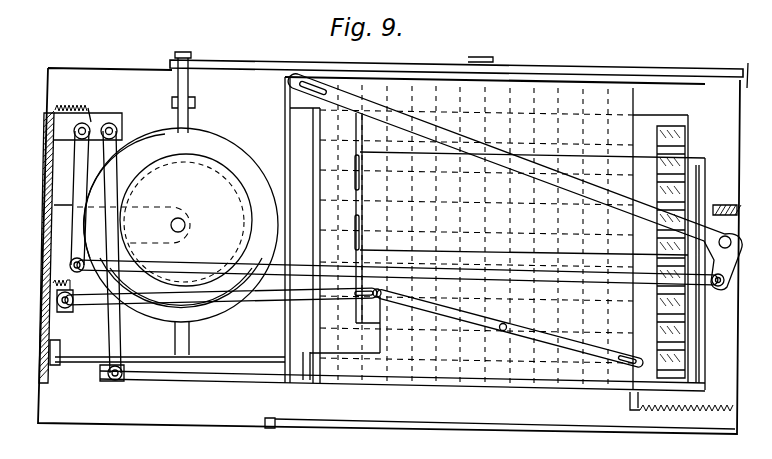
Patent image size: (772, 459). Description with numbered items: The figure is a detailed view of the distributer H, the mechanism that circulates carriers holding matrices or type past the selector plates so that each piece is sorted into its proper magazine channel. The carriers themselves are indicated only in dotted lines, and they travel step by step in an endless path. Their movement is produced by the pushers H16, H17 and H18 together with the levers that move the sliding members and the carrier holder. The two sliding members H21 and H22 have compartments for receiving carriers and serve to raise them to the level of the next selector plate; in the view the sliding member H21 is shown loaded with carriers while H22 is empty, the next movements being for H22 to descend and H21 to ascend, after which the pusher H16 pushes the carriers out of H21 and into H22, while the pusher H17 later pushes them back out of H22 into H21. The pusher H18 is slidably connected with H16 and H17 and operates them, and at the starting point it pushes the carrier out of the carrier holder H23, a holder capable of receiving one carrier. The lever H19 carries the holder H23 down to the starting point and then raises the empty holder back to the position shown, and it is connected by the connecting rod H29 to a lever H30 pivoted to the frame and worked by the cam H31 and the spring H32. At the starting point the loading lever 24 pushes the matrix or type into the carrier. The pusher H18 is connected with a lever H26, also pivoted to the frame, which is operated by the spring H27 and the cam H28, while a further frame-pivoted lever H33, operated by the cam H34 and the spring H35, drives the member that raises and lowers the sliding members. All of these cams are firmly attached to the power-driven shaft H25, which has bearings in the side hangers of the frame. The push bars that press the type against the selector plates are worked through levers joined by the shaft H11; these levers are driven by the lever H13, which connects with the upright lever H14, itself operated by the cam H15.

The distributer H is at (44, 155).
The shaft H11 is at (530, 424).
The lever H13 is at (402, 62).
The upright lever H14 is at (188, 88).
The cam H15 is at (205, 134).
The pusher H16 is at (688, 130).
The pusher H17 is at (352, 310).
The pusher H18 is at (705, 172).
The lever H19 is at (596, 194).
The sliding member H21 is at (528, 101).
The sliding member H22 is at (552, 338).
The carrier holder H23 is at (287, 106).
The lever 24 is at (232, 360).
The shaft H25 is at (186, 224).
The lever H26 is at (117, 336).
The spring H27 is at (636, 410).
The cam H28 is at (178, 188).
The connecting rod H29 is at (397, 272).
The lever H30 is at (80, 174).
The cam H31 is at (156, 160).
The spring H32 is at (70, 104).
The lever H33 is at (264, 300).
The cam H34 is at (158, 286).
The spring H35 is at (60, 278).